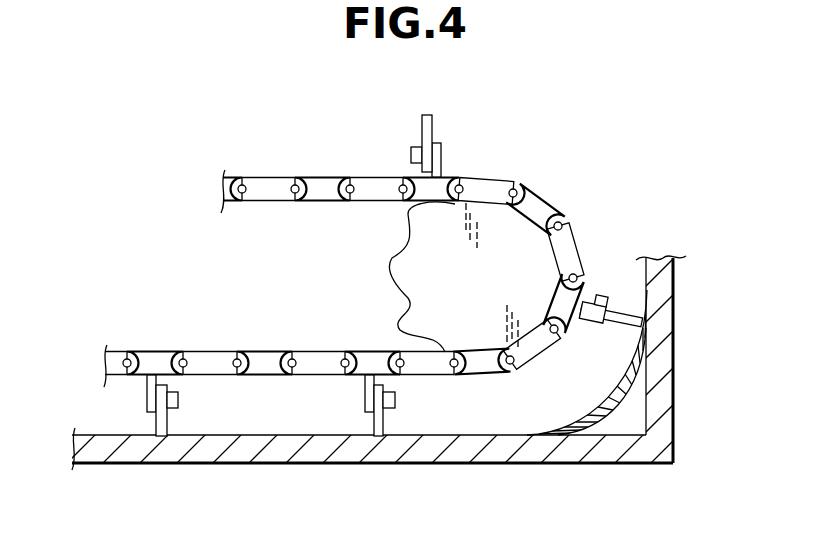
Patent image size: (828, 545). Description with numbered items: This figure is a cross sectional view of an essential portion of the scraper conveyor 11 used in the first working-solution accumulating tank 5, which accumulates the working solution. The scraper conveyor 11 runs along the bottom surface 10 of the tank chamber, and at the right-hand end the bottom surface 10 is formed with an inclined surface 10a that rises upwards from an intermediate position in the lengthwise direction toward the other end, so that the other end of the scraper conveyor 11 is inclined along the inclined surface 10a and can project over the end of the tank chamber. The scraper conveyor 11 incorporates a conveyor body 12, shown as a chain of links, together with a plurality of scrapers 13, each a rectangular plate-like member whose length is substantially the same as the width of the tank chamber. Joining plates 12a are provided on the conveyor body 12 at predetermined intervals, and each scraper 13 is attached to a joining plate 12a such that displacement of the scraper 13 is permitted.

The first working-solution accumulating tank 5 is at (661, 326).
The bottom surface 10 is at (270, 436).
The inclined surface 10a is at (583, 412).
The scraper conveyor 11 is at (358, 241).
The conveyor body 12 is at (381, 177).
The joining plate 12a is at (441, 158).
The scraper 13 is at (432, 118).